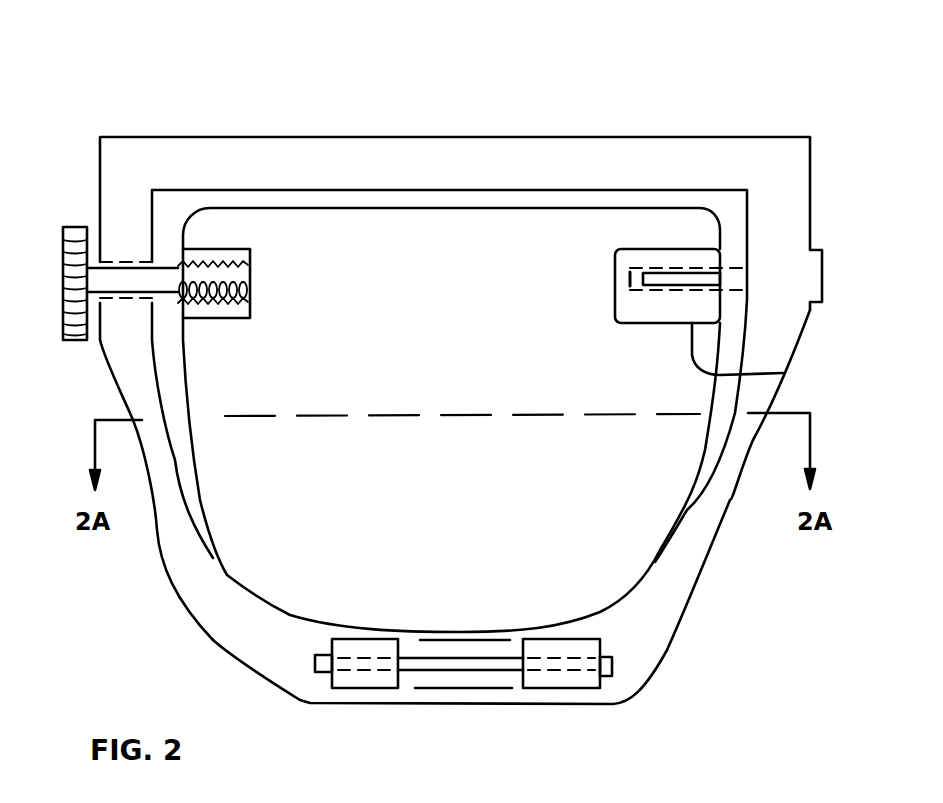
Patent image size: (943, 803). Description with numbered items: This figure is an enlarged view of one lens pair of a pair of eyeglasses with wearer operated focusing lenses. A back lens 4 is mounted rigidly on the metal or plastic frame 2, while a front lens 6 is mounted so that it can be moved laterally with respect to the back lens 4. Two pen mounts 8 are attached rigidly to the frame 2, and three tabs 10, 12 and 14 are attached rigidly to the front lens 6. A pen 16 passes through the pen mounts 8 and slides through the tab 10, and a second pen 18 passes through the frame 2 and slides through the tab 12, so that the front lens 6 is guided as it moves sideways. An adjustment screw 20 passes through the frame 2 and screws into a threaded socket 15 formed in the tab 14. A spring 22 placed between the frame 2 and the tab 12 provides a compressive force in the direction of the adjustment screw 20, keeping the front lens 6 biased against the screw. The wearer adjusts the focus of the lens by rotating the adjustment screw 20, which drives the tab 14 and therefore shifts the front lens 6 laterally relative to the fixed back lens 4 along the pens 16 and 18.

The frame 2 is at (410, 146).
The back lens 4 is at (200, 527).
The front lens 6 is at (227, 488).
The pen mount 8 is at (352, 688).
The tab 10 is at (447, 693).
The tab 12 is at (494, 376).
The tab 14 is at (213, 313).
The threaded socket 15 is at (240, 254).
The pen 16 is at (405, 674).
The pen 18 is at (665, 276).
The adjustment screw 20 is at (62, 287).
The spring 22 is at (738, 256).